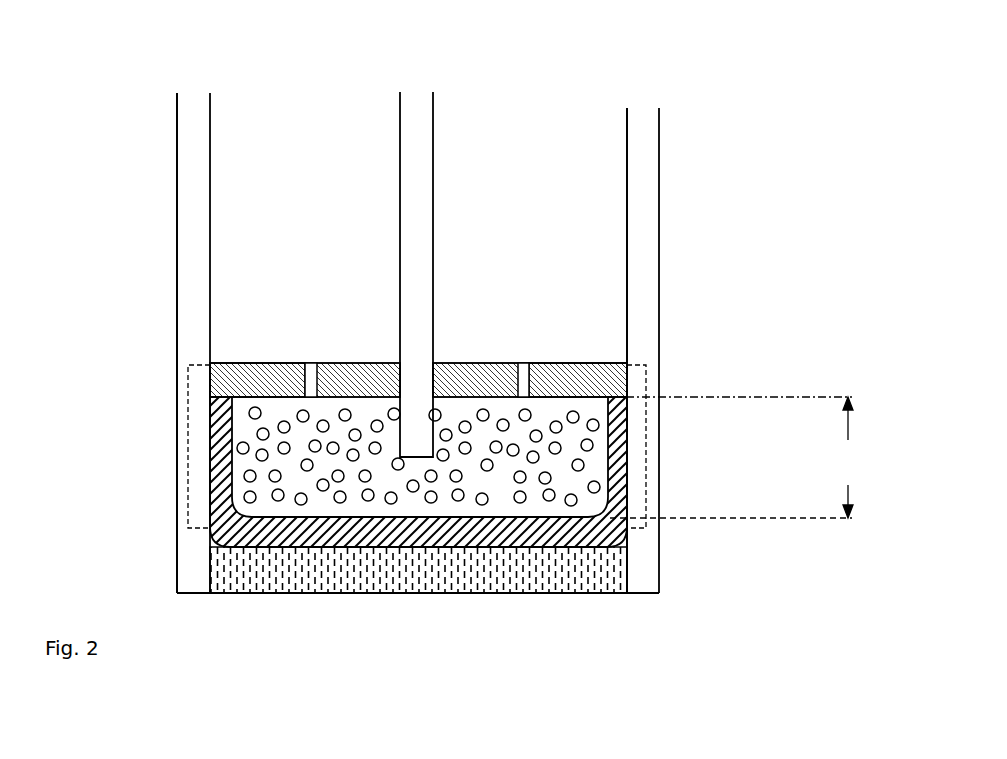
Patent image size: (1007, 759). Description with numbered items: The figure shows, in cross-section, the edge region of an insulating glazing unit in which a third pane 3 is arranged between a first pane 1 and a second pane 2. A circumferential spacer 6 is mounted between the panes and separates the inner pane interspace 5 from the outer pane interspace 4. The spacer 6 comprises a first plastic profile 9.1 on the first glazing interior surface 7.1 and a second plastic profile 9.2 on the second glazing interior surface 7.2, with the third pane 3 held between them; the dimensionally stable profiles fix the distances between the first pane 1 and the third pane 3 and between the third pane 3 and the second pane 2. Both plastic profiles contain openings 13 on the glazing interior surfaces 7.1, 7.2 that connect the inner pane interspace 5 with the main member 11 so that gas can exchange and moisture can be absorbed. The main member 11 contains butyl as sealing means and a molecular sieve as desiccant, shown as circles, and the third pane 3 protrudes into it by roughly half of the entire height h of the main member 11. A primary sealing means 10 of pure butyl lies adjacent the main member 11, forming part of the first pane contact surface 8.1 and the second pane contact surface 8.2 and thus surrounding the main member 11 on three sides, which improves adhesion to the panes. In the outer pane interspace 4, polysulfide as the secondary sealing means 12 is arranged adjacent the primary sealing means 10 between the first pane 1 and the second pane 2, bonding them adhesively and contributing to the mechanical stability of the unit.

The first pane 1 is at (187, 200).
The second pane 2 is at (642, 211).
The third pane 3 is at (417, 100).
The outer pane interspace 4 is at (177, 400).
The inner pane interspace 5 is at (255, 160).
The spacer 6 is at (627, 364).
The first glazing interior surface 7.1 is at (263, 363).
The second glazing interior surface 7.2 is at (572, 363).
The first pane contact surface 8.1 is at (186, 450).
The second pane contact surface 8.2 is at (648, 448).
The first plastic profile 9.1 is at (370, 380).
The second plastic profile 9.2 is at (480, 380).
The primary sealing means 10 is at (605, 534).
The main member 11 is at (555, 462).
The secondary sealing means 12 is at (612, 573).
The openings 13 is at (311, 380).
The height of the main member h is at (733, 457).